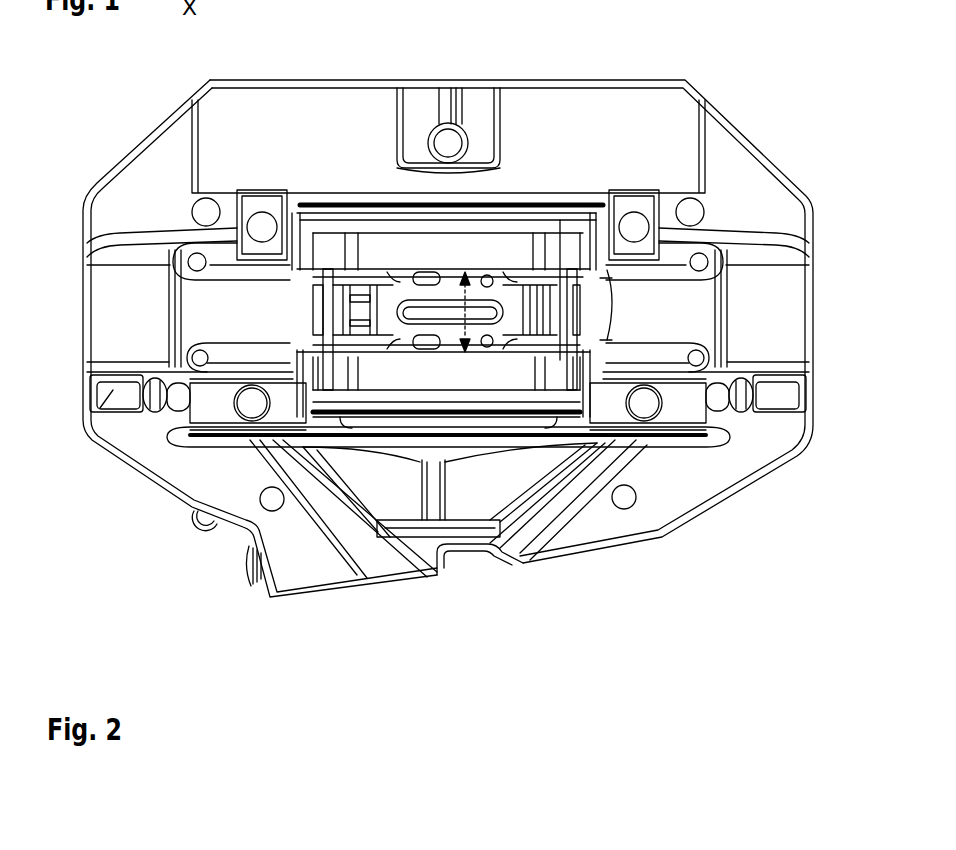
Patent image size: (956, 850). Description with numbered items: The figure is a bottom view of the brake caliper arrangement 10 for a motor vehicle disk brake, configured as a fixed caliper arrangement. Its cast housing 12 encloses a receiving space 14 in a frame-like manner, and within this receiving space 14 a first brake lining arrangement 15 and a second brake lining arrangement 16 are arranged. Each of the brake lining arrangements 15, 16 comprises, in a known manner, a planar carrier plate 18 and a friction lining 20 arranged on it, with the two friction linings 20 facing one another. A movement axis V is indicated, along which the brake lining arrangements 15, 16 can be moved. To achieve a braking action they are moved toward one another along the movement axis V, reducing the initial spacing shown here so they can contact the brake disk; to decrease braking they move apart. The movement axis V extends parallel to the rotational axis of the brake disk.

The brake caliper arrangement 10 is at (775, 126).
The housing 12 is at (112, 396).
The receiving space 14 is at (294, 310).
The first brake lining arrangement 15 is at (359, 181).
The second brake lining arrangement 16 is at (398, 436).
The carrier plate 18 is at (572, 227).
The friction lining 20 is at (513, 253).
The movement axis V is at (467, 338).